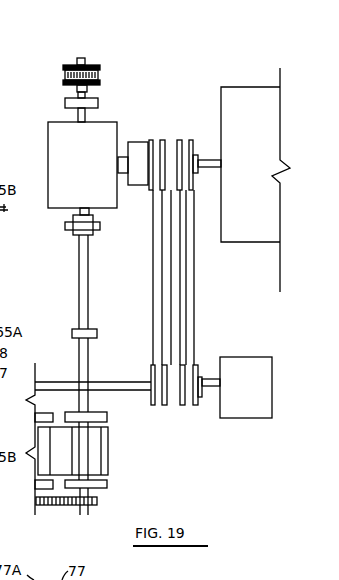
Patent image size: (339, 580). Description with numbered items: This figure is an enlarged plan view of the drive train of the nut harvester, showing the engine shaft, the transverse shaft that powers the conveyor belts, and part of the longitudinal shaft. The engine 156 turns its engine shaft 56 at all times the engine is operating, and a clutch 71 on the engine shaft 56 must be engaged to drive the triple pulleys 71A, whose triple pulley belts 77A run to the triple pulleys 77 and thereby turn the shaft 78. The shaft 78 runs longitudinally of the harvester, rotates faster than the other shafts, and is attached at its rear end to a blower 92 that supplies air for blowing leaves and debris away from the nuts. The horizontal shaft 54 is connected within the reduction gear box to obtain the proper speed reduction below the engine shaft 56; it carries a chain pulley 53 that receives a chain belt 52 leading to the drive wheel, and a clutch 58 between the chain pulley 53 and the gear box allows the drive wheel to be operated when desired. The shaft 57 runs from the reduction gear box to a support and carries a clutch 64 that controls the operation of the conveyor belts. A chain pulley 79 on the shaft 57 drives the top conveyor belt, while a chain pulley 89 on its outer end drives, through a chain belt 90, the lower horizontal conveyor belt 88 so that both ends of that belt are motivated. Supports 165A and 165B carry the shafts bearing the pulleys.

The chain belt 52 is at (100, 72).
The chain pulley 53 is at (100, 63).
The horizontal shaft 54 is at (88, 90).
The engine shaft 56 is at (213, 160).
The shaft 57 is at (88, 266).
The clutch 58 is at (98, 102).
The clutch 64 is at (100, 228).
The clutch 71 is at (138, 157).
The triple pulleys 71A is at (165, 140).
The triple pulleys 77 is at (200, 366).
The triple pulley belts 77A is at (155, 281).
The shaft 78 is at (72, 382).
The chain pulley 79 is at (96, 330).
The lower horizontal conveyor belt 88 is at (108, 452).
The chain pulley 89 is at (75, 505).
The chain belt 90 is at (55, 505).
The blower 92 is at (272, 390).
The engine 156 is at (250, 97).
The support 165A is at (107, 422).
The support 165B is at (107, 484).